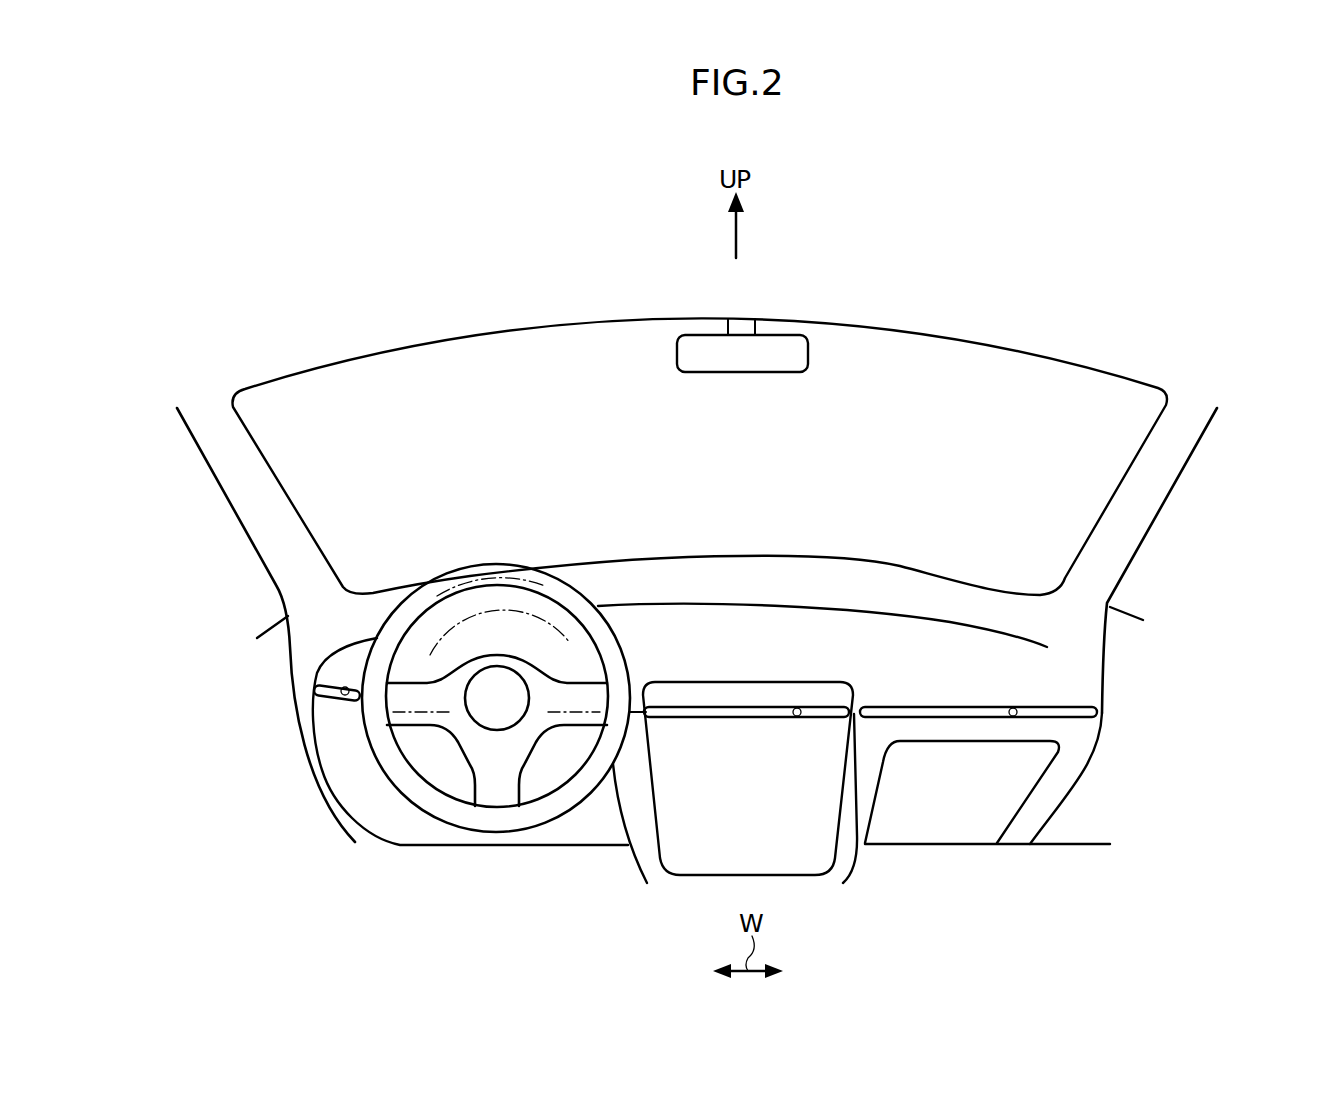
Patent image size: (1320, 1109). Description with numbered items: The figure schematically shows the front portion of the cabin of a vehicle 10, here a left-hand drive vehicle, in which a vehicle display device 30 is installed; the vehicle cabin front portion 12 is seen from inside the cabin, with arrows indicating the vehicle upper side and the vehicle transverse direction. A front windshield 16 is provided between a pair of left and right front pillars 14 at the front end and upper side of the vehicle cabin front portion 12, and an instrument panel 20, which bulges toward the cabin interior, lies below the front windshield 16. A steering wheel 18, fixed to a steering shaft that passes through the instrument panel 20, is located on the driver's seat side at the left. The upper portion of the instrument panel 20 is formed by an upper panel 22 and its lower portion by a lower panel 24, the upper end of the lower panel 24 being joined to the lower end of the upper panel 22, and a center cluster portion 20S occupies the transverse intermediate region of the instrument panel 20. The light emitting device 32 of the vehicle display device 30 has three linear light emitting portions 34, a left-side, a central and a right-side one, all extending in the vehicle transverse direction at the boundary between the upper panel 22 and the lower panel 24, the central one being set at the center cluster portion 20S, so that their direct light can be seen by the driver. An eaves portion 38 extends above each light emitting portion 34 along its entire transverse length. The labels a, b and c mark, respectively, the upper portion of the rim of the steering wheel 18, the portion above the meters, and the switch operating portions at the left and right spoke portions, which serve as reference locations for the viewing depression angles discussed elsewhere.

The vehicle 10 is at (1119, 242).
The vehicle cabin front portion 12 is at (1150, 682).
The front pillars 14 is at (243, 495).
The front windshield 16 is at (968, 357).
The steering wheel 18 is at (572, 585).
The instrument panel 20 is at (1084, 742).
The center cluster portion 20S is at (838, 757).
The upper panel 22 is at (809, 608).
The lower panel 24 is at (870, 793).
The vehicle display device 30 is at (794, 728).
The light emitting device 32 is at (760, 727).
The light emitting portions 34 is at (330, 682).
The eaves portion 38 is at (345, 688).
The upper portion of the rim portion of the steering wheel a is at (455, 592).
The portion above the meters b is at (570, 643).
The switch operating portions at left and right spoke portions of the steering wheel c is at (405, 716).